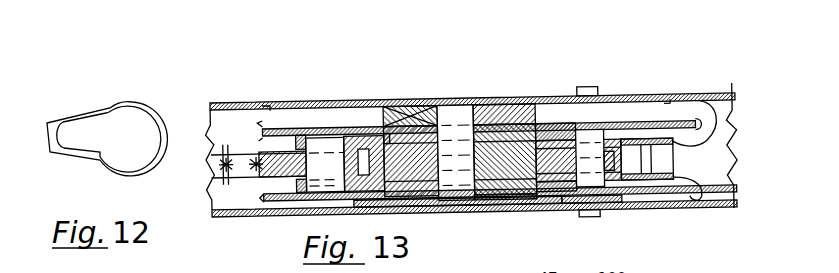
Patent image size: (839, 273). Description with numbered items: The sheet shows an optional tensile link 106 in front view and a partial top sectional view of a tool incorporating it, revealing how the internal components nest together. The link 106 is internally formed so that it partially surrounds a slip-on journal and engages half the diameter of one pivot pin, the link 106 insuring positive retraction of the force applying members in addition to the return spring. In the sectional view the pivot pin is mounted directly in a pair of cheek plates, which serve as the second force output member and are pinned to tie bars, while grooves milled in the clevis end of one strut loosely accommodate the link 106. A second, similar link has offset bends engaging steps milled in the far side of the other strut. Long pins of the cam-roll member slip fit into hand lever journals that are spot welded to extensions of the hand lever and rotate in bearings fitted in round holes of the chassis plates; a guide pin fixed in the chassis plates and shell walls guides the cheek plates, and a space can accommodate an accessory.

The tensile link 106 is at (87, 117).